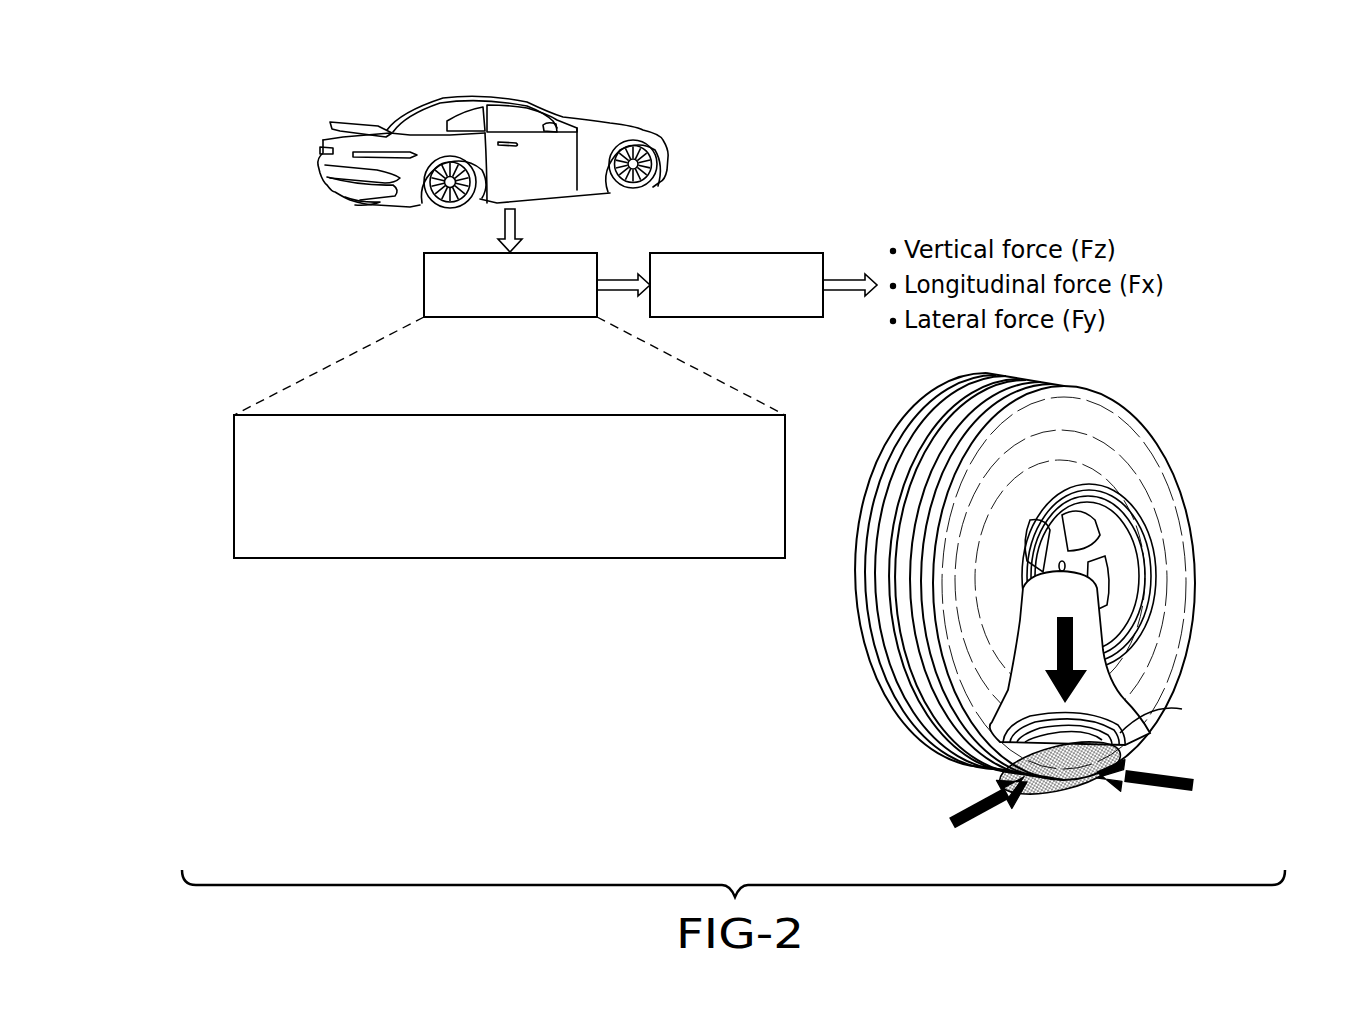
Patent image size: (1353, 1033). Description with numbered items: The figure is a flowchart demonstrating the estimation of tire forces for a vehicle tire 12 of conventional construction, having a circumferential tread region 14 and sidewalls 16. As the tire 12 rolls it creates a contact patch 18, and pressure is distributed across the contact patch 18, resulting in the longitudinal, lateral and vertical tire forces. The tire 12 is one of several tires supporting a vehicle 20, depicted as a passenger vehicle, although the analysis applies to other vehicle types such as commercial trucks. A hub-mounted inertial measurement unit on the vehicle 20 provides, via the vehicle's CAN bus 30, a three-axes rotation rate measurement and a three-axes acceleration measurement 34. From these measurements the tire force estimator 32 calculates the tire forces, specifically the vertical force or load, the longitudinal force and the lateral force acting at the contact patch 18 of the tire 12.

The vehicle tire 12 is at (1158, 428).
The circumferential tread region 14 is at (886, 650).
The sidewalls 16 is at (1167, 576).
The contact patch 18 is at (1060, 789).
The vehicle 20 is at (600, 118).
The CAN bus 30 is at (424, 283).
The tire force estimator 32 is at (752, 253).
The 3-axes of rotation rate measurement and 3-axes of acceleration measurement 34 is at (512, 558).